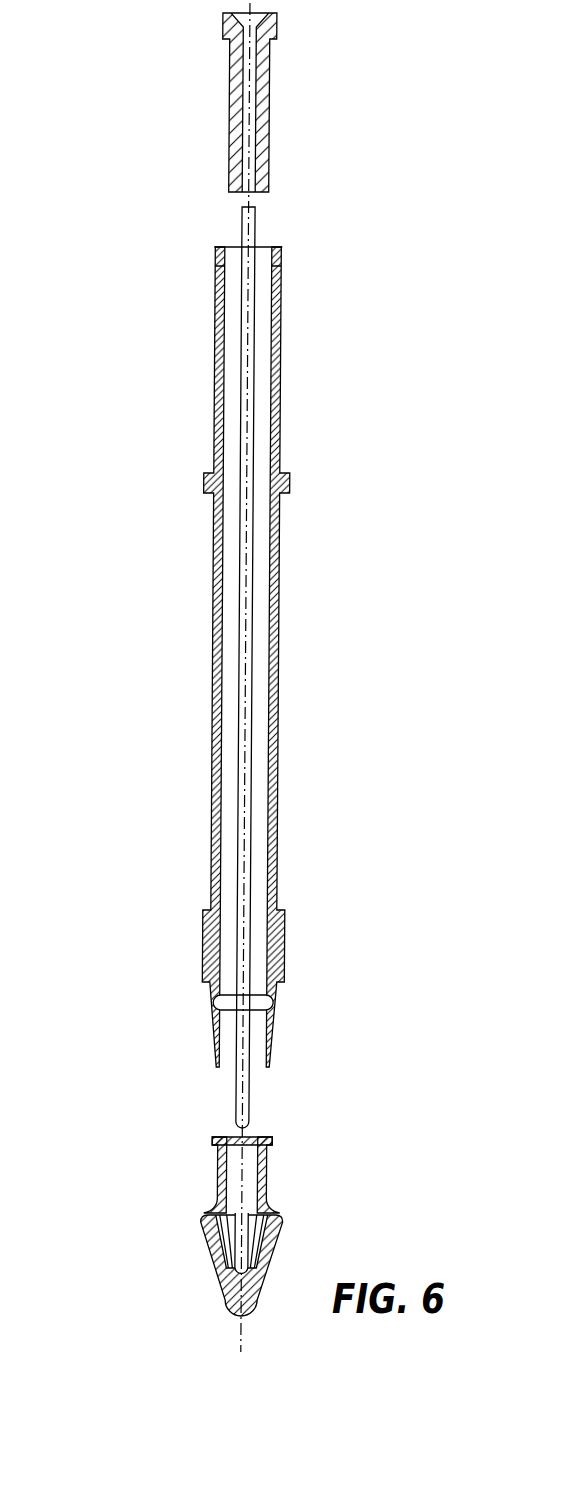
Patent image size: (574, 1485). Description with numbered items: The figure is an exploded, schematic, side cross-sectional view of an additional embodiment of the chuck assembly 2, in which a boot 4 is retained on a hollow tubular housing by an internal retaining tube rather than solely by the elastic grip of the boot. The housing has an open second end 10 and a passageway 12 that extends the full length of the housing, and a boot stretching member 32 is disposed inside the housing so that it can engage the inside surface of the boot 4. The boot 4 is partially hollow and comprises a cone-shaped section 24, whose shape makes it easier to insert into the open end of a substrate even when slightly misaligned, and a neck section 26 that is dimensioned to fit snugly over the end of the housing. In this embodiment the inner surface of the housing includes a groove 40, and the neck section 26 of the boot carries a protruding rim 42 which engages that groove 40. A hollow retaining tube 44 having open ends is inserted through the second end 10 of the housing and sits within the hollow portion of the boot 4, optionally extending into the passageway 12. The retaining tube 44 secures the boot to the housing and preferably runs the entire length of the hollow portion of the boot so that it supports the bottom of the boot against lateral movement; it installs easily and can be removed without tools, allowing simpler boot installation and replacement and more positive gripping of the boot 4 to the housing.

The chuck assembly 2 is at (124, 593).
The boot 4 is at (204, 1290).
The second end 10 is at (265, 248).
The passageway 12 is at (260, 787).
The cone-shaped section 24 is at (262, 1288).
The neck section 26 is at (266, 1178).
The boot stretching member 32 is at (251, 595).
The groove 40 is at (258, 1003).
The protruding rim 42 is at (265, 1140).
The retaining tube 44 is at (270, 90).